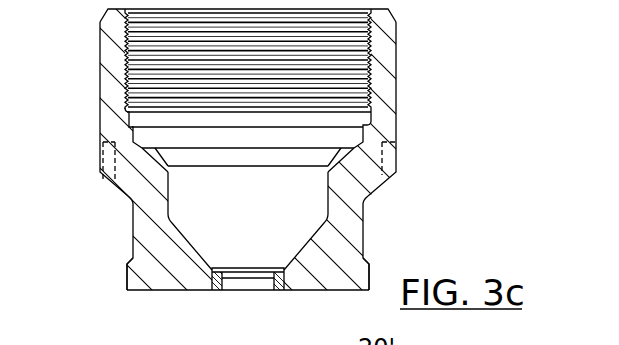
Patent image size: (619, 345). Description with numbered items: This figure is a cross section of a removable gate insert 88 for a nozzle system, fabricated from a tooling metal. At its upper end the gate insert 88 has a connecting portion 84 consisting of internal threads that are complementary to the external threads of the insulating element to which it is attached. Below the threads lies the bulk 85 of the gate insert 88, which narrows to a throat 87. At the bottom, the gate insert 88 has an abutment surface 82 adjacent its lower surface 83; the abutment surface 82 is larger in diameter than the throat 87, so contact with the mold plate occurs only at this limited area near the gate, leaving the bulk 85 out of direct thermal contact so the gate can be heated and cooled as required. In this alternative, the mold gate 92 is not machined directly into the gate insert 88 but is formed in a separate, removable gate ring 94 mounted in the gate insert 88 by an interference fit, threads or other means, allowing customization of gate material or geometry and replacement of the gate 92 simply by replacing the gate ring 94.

The abutment surface 82 is at (128, 273).
The lower surface 83 is at (177, 292).
The connecting portion 84 is at (118, 73).
The bulk 85 is at (398, 128).
The throat 87 is at (362, 213).
The gate insert 88 is at (390, 42).
The mold gate 92 is at (262, 252).
The gate ring 94 is at (285, 292).